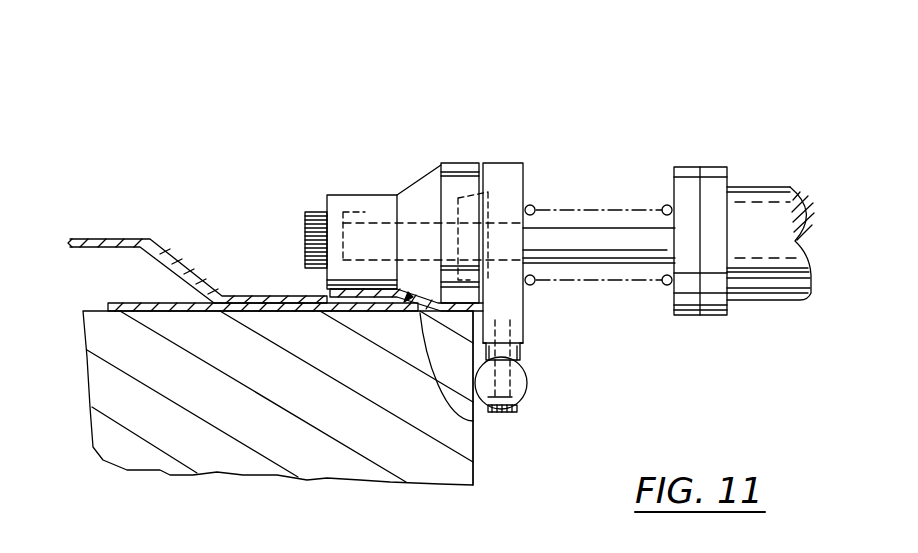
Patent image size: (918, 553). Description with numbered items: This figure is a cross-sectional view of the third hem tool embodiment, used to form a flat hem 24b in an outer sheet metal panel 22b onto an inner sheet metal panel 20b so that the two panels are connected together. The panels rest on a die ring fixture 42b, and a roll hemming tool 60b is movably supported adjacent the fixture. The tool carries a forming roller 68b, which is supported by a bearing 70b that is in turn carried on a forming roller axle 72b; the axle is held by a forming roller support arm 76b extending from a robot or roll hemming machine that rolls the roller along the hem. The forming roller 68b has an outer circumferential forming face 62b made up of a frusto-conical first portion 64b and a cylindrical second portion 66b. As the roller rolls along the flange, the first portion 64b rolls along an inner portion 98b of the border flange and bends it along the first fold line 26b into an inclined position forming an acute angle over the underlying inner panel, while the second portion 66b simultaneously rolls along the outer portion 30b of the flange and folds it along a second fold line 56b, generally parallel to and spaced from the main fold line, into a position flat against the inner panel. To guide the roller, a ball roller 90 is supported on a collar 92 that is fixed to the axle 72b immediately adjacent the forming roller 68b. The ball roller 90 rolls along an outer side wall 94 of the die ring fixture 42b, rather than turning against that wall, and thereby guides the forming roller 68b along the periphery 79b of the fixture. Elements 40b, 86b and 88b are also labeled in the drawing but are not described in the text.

The inner sheet metal panel 20b is at (98, 243).
The outer sheet metal panel 22b is at (132, 302).
The flat hem 24b is at (378, 200).
The first fold line 26b is at (473, 421).
The outer portion of the border flange 30b is at (327, 289).
The fastener 40b is at (410, 316).
The die ring fixture 42b is at (350, 468).
The second fold line 56b is at (398, 286).
The roll hemming tool 60b is at (524, 157).
The forming face 62b is at (354, 188).
The frusto-conical first portion 64b is at (421, 183).
The cylindrical second portion 66b is at (400, 196).
The forming roller 68b is at (322, 194).
The bearing 70b is at (493, 222).
The forming roller axle 72b is at (658, 234).
The forming roller support arm 76b is at (777, 197).
The periphery of the die ring fixture 79b is at (470, 318).
The pivot axis 86b is at (629, 282).
The flange 88b is at (693, 315).
The ball roller 90 is at (530, 380).
The collar 92 is at (494, 163).
The outer side wall of the die ring fixture 94 is at (475, 444).
The inner portion of the border flange 98b is at (403, 282).